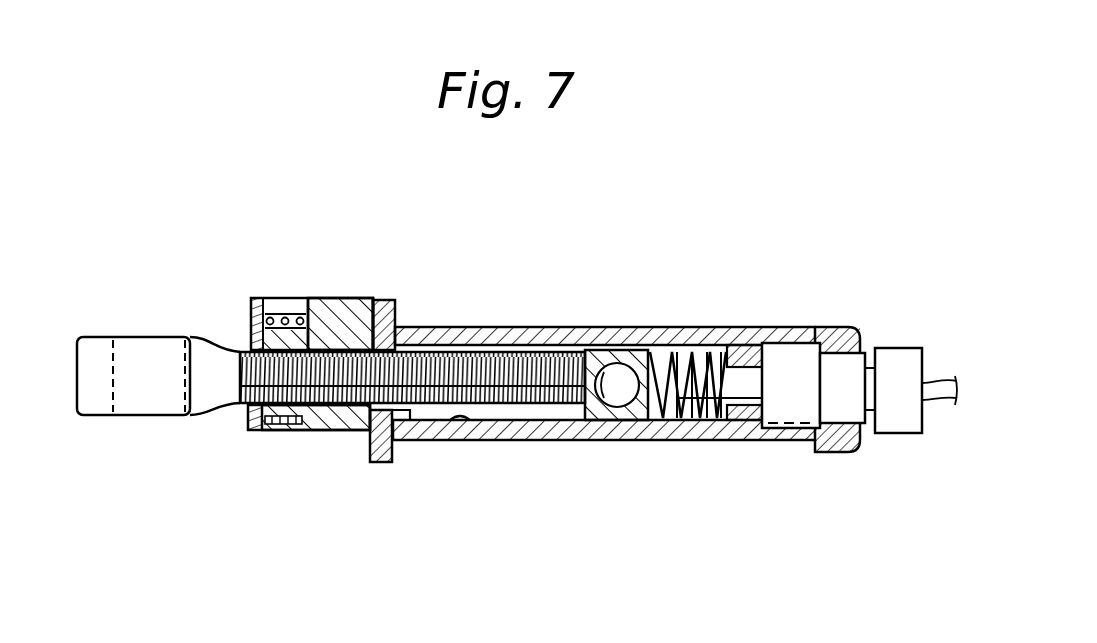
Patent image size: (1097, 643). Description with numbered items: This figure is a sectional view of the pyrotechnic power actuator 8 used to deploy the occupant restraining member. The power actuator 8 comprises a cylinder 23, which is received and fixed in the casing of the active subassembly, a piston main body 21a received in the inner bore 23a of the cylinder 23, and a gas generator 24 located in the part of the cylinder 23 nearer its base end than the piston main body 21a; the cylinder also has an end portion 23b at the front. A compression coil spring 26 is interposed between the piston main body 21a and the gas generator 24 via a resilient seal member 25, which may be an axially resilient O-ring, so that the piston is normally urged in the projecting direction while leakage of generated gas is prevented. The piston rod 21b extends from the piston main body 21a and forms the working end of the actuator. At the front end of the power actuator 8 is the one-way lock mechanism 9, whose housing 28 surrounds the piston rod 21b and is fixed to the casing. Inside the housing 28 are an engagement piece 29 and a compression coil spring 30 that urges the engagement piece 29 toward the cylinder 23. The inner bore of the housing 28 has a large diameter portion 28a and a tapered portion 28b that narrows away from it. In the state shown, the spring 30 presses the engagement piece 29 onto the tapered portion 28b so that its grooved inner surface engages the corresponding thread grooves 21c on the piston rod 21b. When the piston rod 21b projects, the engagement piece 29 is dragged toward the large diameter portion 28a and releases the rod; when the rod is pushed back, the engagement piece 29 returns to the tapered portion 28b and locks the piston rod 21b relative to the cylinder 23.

The power actuator 8 is at (558, 228).
The one-way lock mechanism 9 is at (275, 440).
The piston main body 21a is at (592, 425).
The piston rod 21b is at (310, 422).
The thread grooves 21c is at (478, 360).
The cylinder 23 is at (601, 326).
The inner bore 23a is at (458, 438).
The cylinder flange 23b is at (405, 320).
The gas generator 24 is at (790, 357).
The resilient seal member 25 is at (733, 407).
The compression coil spring 26 is at (693, 350).
The housing 28 is at (353, 432).
The large diameter portion 28a is at (251, 318).
The tapered portion 28b is at (361, 320).
The engagement piece 29 is at (318, 335).
The compression coil spring 30 is at (290, 315).